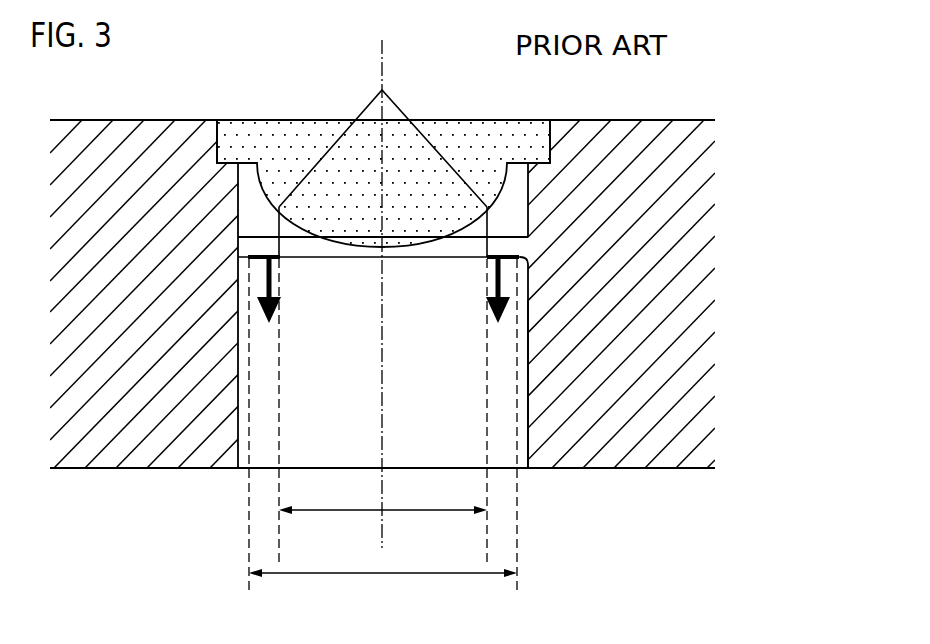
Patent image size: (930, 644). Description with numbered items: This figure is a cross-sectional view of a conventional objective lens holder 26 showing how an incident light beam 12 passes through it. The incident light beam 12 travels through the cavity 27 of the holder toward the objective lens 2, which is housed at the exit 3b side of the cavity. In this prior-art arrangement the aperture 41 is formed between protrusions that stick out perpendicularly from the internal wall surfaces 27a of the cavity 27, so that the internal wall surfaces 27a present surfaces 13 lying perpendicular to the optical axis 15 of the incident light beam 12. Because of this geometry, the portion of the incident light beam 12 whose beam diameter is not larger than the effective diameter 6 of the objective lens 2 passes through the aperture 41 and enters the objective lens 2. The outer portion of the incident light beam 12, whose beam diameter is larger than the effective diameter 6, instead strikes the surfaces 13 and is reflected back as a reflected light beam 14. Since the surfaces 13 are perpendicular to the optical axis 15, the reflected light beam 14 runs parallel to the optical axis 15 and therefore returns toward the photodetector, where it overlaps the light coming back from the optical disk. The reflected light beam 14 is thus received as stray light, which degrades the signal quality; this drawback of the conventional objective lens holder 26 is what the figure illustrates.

The objective lens 2 is at (438, 128).
The exit 3b is at (218, 148).
The effective diameter 6 is at (437, 512).
The incident light beam 12 is at (437, 576).
The surfaces 13 is at (253, 257).
The reflected light beam 14 is at (495, 274).
The optical axis 15 is at (388, 66).
The conventional objective lens holder 26 is at (642, 128).
The cavity 27 is at (521, 405).
The internal wall surfaces 27a is at (527, 458).
The aperture 41 is at (487, 247).